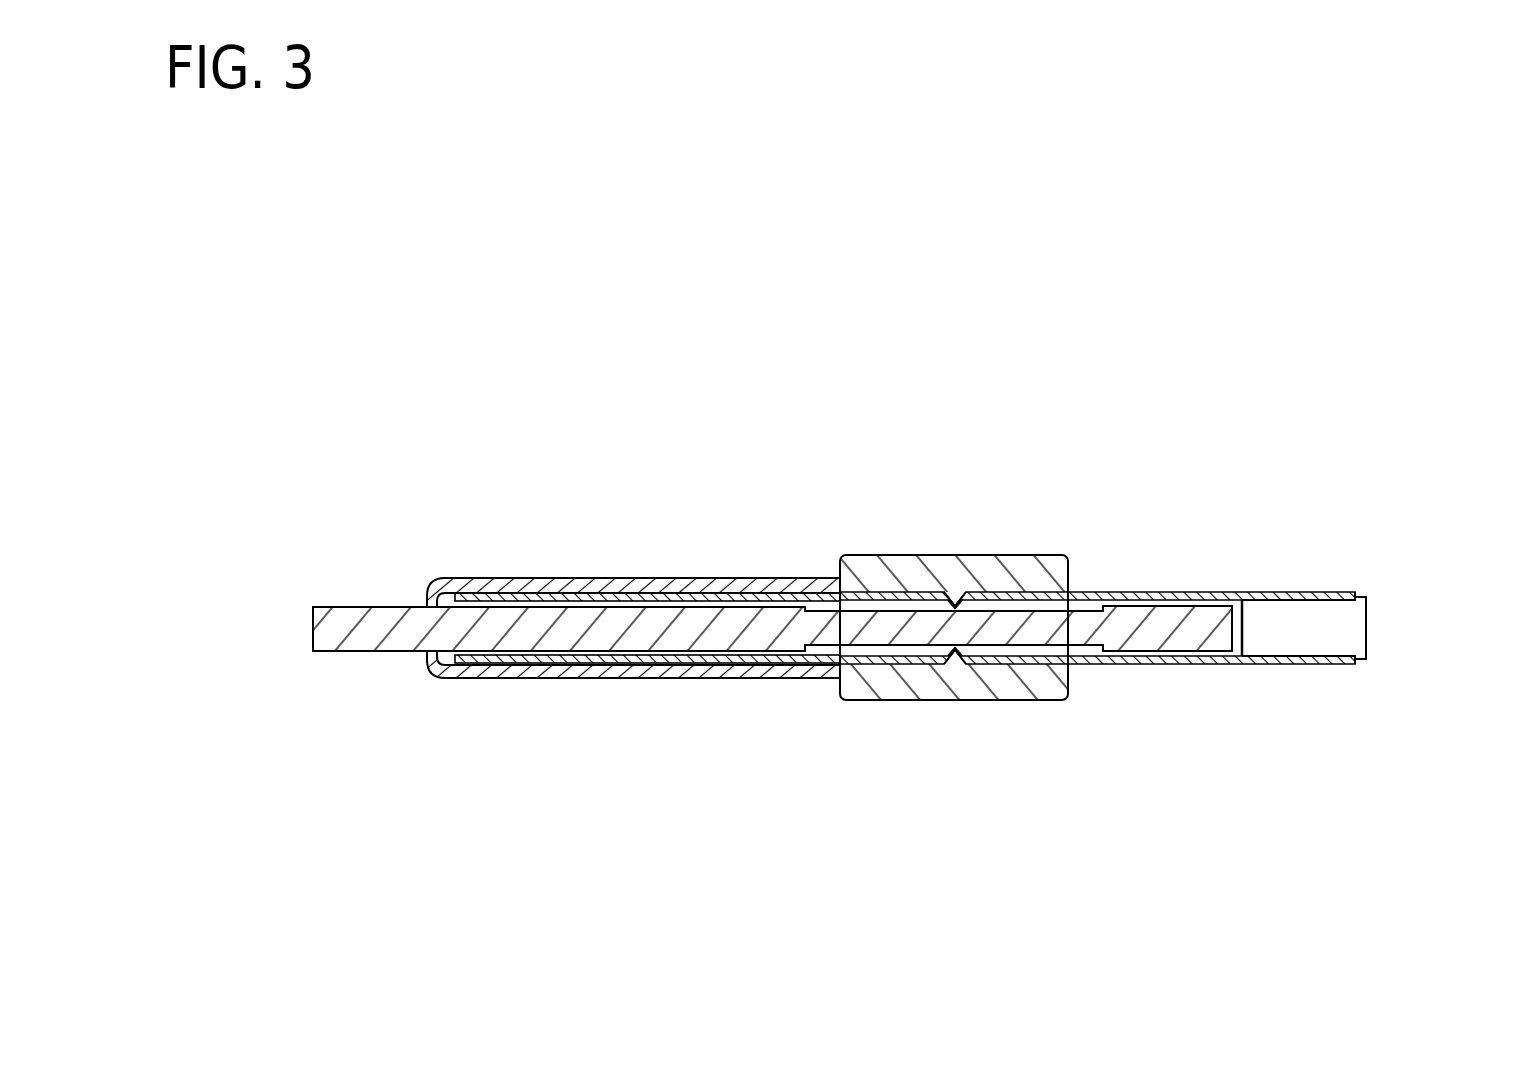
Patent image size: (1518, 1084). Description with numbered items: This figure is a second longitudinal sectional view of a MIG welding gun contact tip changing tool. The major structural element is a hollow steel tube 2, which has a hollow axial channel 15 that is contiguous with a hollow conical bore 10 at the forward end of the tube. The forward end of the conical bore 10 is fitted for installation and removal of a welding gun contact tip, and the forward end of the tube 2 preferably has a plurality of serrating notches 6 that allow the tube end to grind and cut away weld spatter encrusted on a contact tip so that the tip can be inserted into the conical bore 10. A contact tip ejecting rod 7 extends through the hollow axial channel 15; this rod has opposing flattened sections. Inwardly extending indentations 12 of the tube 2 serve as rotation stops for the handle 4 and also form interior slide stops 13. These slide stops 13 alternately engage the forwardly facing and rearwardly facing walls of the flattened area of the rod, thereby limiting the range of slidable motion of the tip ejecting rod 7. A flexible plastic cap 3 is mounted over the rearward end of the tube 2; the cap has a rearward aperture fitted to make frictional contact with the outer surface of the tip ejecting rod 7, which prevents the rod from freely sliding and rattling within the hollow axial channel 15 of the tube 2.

The hollow steel tube 2 is at (1202, 663).
The flexible plastic cap 3 is at (481, 668).
The handle 4 is at (852, 688).
The serrating notches 6 is at (1360, 594).
The contact tip ejecting rod 7 is at (330, 637).
The hollow conical bore 10 is at (1311, 614).
The inwardly extending indentations 12 is at (955, 600).
The interior slide stops 13 is at (1005, 602).
The hollow axial channel 15 is at (623, 596).